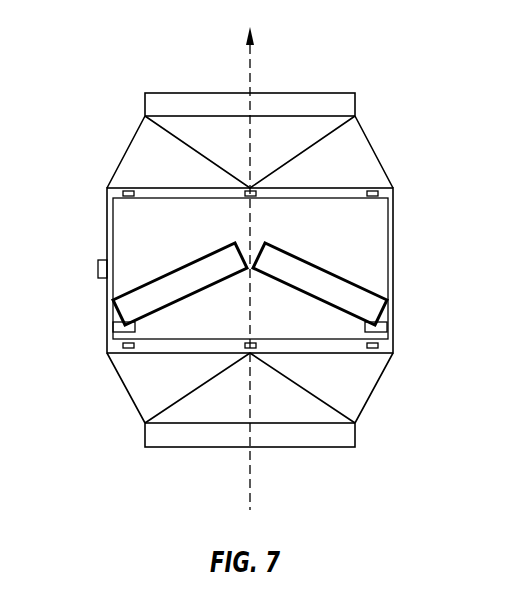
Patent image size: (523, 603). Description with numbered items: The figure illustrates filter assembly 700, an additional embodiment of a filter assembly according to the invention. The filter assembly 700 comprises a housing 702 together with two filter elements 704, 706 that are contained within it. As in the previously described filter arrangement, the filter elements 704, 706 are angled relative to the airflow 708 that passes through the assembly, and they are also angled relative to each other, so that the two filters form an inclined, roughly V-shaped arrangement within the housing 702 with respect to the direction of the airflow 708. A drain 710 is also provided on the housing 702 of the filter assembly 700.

The filter assembly 700 is at (354, 45).
The housing 702 is at (375, 143).
The filter element 704 is at (340, 293).
The filter element 706 is at (158, 295).
The airflow 708 is at (252, 487).
The drain 710 is at (98, 268).